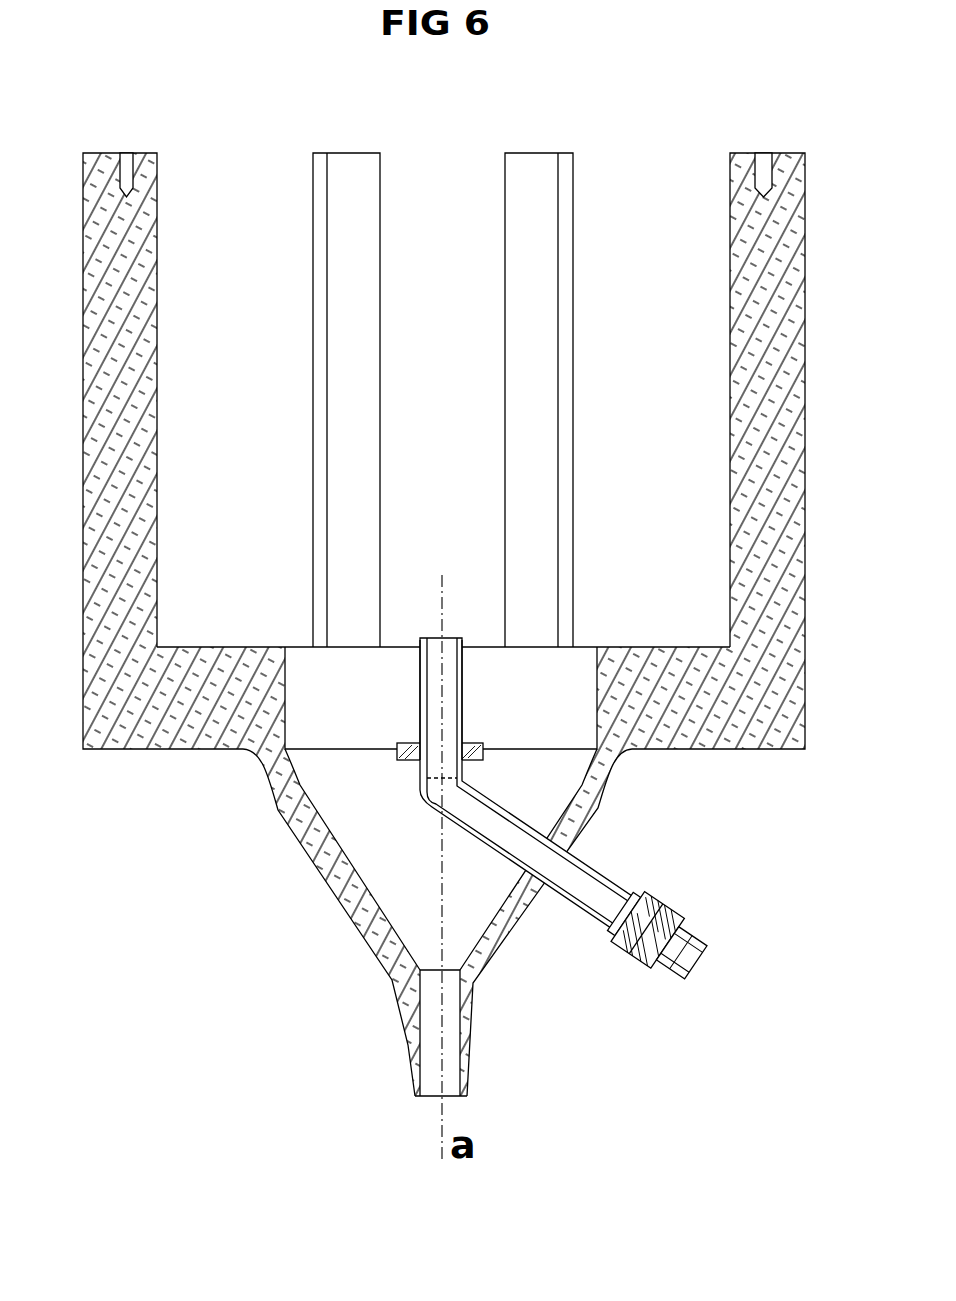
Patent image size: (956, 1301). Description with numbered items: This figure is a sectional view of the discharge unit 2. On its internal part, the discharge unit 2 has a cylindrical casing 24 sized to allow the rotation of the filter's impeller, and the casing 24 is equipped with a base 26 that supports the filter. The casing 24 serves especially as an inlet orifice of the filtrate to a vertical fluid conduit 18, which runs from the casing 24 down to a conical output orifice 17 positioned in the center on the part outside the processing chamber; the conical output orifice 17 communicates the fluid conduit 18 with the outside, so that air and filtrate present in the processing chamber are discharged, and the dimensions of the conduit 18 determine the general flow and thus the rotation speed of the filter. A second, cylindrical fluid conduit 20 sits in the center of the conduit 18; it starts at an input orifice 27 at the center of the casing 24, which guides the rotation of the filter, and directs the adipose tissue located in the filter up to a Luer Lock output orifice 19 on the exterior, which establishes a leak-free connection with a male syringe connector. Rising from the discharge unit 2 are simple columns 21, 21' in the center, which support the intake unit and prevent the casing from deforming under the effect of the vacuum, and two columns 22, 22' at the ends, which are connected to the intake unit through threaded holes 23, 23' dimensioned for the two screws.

The discharge unit 2 is at (110, 765).
The conical output orifice 17 is at (410, 1055).
The fluid conduit 18 is at (420, 852).
The Luer Lock output orifice 19 is at (697, 923).
The fluid conduit 20 is at (615, 827).
The simple column 21 is at (390, 392).
The simple column 21' is at (600, 400).
The column 22 is at (170, 400).
The column 22' is at (720, 400).
The threaded hole 23 is at (135, 142).
The threaded hole 23' is at (766, 142).
The casing 24 is at (318, 700).
The base 26 is at (490, 758).
The input orifice 27 is at (443, 703).